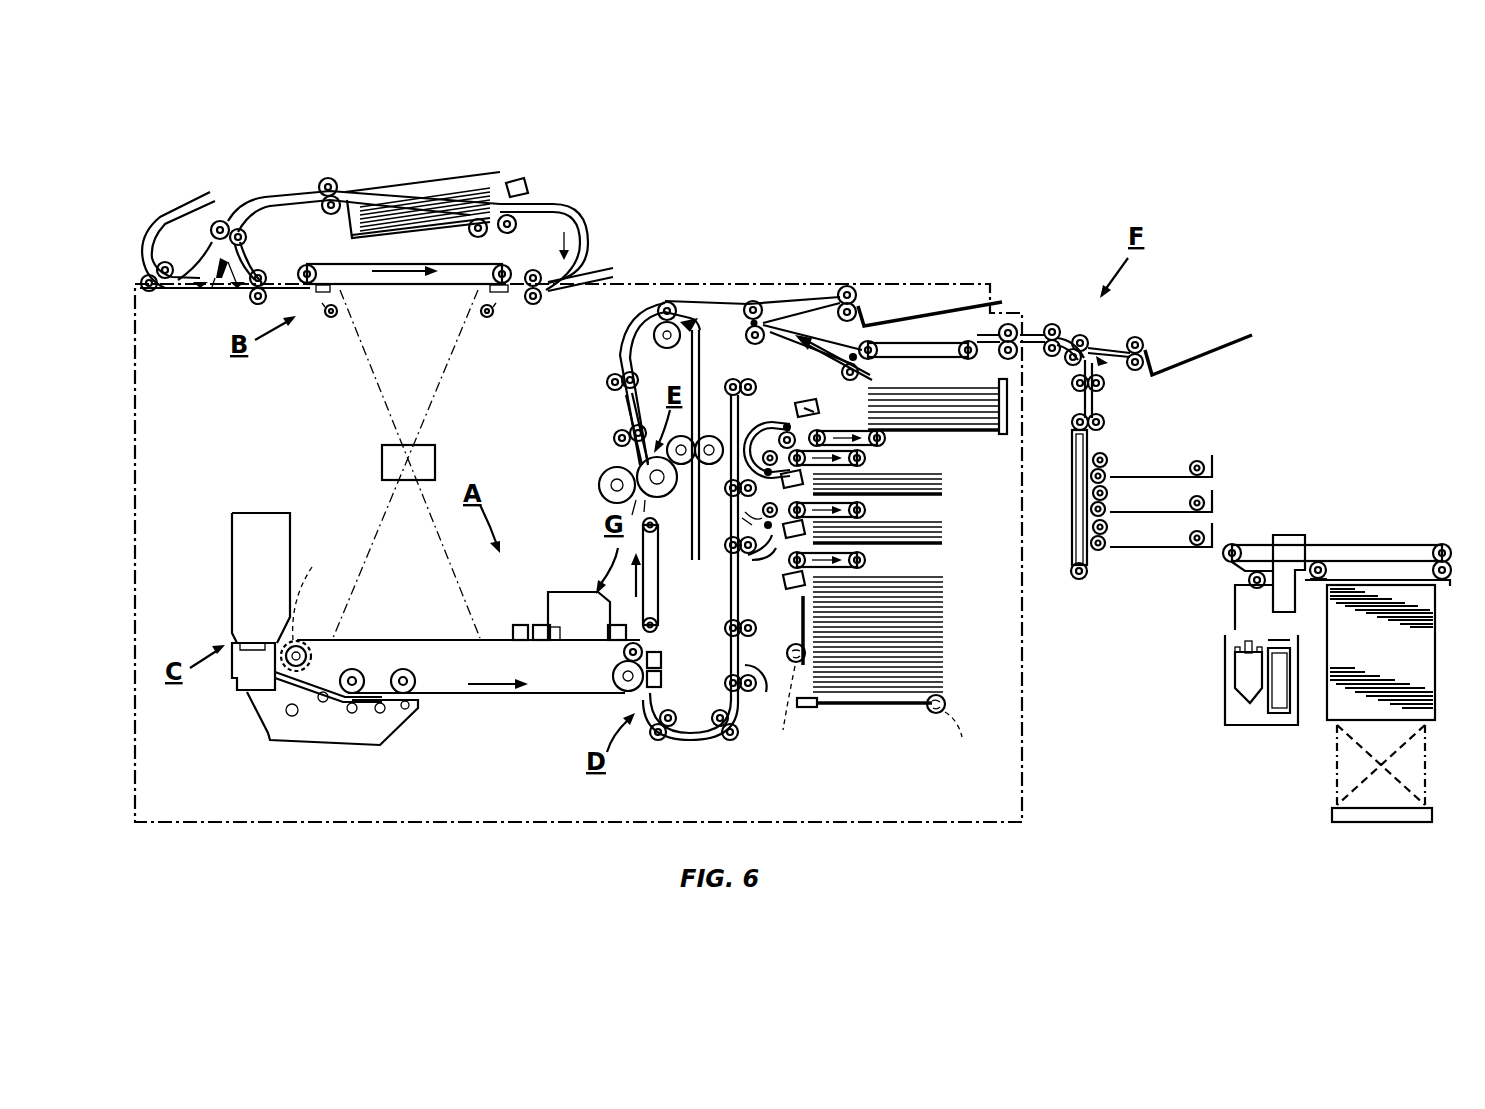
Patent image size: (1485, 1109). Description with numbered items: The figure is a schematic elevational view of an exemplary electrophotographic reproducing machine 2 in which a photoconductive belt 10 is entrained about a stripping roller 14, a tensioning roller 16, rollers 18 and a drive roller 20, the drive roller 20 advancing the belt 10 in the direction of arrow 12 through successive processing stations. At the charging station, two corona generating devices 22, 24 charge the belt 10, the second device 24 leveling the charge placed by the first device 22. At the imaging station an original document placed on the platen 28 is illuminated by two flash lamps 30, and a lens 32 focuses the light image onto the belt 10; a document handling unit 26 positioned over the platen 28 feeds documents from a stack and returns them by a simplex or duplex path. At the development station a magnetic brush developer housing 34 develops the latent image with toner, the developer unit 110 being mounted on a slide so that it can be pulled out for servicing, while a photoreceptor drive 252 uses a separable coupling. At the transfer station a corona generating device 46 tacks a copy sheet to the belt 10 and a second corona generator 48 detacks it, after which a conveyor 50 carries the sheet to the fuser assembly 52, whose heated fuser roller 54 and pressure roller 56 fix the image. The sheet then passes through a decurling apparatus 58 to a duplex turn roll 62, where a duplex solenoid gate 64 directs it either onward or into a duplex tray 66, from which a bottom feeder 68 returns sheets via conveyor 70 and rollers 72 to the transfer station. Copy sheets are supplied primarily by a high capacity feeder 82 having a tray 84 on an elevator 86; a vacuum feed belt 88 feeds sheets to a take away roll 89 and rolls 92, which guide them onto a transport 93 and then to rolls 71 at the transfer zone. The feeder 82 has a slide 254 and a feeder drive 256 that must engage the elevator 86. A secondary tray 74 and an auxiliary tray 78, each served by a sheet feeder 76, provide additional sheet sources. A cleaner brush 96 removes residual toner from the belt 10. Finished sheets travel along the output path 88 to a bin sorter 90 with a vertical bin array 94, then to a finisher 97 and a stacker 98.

The electrophotographic reproducing machine 2 is at (698, 165).
The document handling unit 26 is at (562, 191).
The platen 28 is at (502, 291).
The flash lamps 30 is at (330, 318).
The lens 32 is at (420, 446).
The photoconductive belt 10 is at (492, 640).
The arrow 12 is at (488, 682).
The stripping roller 14 is at (624, 654).
The tensioning roller 16 is at (360, 672).
The rollers 18 is at (412, 674).
The drive roller 20 is at (302, 640).
The corona generating device 22 is at (545, 625).
The corona generating device 24 is at (520, 625).
The magnetic brush developer housing 34 is at (258, 715).
The corona generating device 46 is at (663, 678).
The second corona generator 48 is at (663, 658).
The conveyor 50 is at (660, 560).
The fuser assembly 52 is at (608, 460).
The heated fuser roller 54 is at (598, 485).
The pressure roller 56 is at (660, 498).
The decurling apparatus 58 is at (612, 432).
The duplex turn roll 62 is at (712, 436).
The duplex solenoid gate 64 is at (688, 340).
The duplex tray 66 is at (970, 432).
The bottom feeder 68 is at (880, 445).
The conveyor 70 is at (760, 440).
The rolls 71 is at (670, 738).
The rollers 72 is at (788, 425).
The secondary tray 74 is at (942, 545).
The sheet feeder 76 is at (866, 510).
The auxiliary tray 78 is at (938, 494).
The high capacity feeder 82 is at (950, 597).
The tray 84 is at (860, 706).
The elevator 86 is at (803, 625).
The vacuum feed belt 88 is at (1035, 335).
The take away roll 89 is at (745, 558).
The bin sorter 90 is at (1103, 455).
The rolls 92 is at (778, 560).
The transport 93 is at (754, 690).
The vertical bin array 94 is at (1122, 546).
The cleaner brush 96 is at (553, 590).
The finisher 97 is at (1270, 608).
The stacker 98 is at (1438, 672).
The developer unit 110 is at (307, 756).
The photoreceptor drive 252 is at (325, 591).
The slide 254 is at (961, 726).
The high-speed capacity feeder drive 256 is at (787, 712).